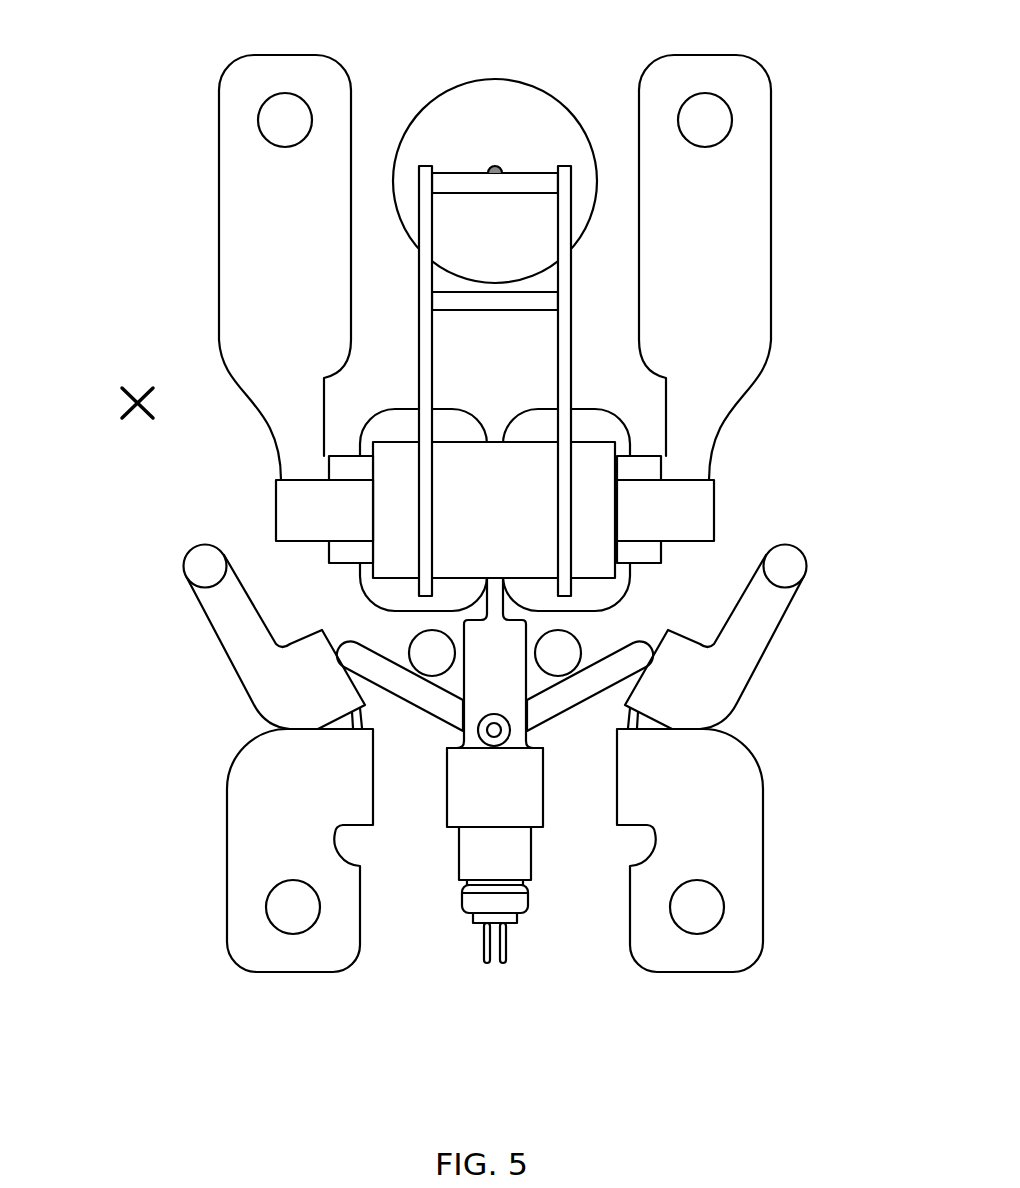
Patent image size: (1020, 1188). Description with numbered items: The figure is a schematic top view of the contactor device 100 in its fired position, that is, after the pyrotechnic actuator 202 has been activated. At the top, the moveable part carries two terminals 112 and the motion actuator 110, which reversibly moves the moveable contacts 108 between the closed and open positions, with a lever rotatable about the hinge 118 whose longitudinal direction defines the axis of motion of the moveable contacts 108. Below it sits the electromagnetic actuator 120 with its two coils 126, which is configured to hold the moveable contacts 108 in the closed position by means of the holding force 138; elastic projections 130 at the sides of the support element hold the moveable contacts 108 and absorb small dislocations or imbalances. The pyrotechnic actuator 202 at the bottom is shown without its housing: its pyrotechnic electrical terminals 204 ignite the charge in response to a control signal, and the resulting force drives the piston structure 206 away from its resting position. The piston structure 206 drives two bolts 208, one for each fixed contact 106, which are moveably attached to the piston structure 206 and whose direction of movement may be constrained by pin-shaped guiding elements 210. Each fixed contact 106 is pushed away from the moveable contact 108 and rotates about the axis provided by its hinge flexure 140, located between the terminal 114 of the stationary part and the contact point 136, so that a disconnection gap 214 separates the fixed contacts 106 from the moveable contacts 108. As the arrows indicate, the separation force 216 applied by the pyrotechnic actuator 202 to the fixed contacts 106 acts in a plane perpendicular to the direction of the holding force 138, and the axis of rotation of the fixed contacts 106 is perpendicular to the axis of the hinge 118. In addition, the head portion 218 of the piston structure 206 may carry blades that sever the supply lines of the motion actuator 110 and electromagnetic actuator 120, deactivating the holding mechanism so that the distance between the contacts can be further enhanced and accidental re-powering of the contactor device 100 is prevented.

The contactor device 100 is at (474, 524).
The fixed contact 106 is at (233, 663).
The moveable contact 108 is at (285, 430).
The motion actuator 110 is at (523, 100).
The terminal 112 is at (232, 113).
The terminal 114 is at (245, 949).
The hinge 118 is at (491, 310).
The electromagnetic actuator 120 is at (406, 383).
The coil 126 is at (374, 420).
The elastic projections 130 is at (705, 500).
The contact point 136 is at (195, 573).
The holding force 138 is at (125, 402).
The hinge flexure 140 is at (354, 738).
The pyrotechnic actuator 202 is at (473, 801).
The pyrotechnic electrical terminals 204 is at (503, 966).
The piston structure 206 is at (522, 803).
The bolts 208 is at (415, 704).
The guiding elements 210 is at (568, 649).
The disconnection gap 214 is at (249, 544).
The separation force 216 is at (103, 566).
The head portion 218 is at (483, 582).